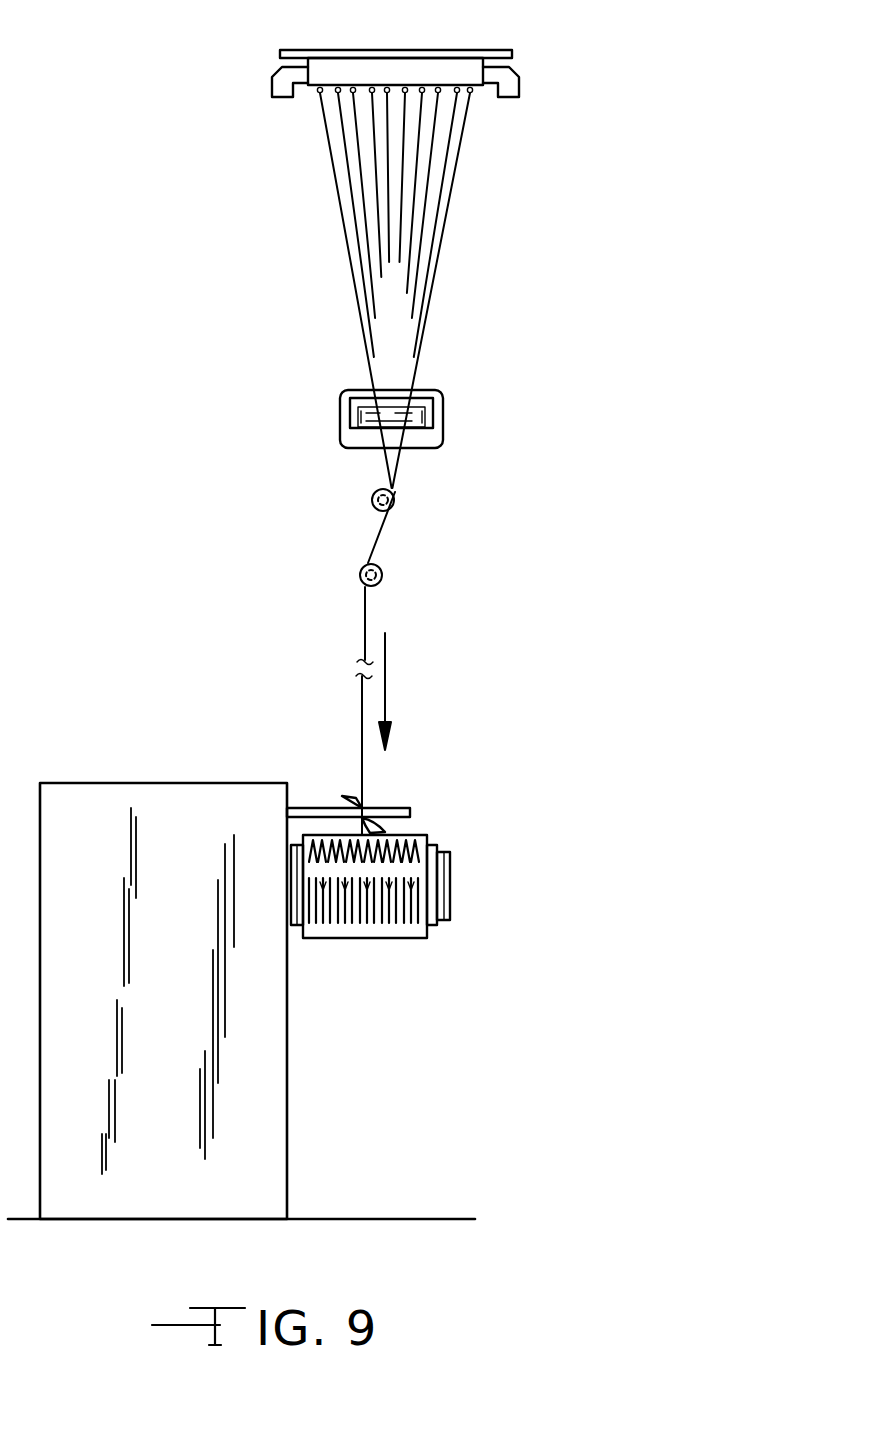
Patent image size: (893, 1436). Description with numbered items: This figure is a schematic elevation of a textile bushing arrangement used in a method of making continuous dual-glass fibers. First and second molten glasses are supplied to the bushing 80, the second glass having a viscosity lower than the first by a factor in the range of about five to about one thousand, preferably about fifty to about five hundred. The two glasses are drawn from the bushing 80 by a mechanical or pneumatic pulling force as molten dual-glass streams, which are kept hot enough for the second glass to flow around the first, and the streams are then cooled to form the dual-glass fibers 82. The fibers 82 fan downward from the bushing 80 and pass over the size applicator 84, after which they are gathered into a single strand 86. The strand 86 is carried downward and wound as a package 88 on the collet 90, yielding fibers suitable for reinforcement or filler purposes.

The bushing 80 is at (460, 72).
The dual-glass fibers 82 is at (388, 165).
The size applicator 84 is at (435, 392).
The strand 86 is at (365, 616).
The package 88 is at (368, 940).
The collet 90 is at (450, 880).